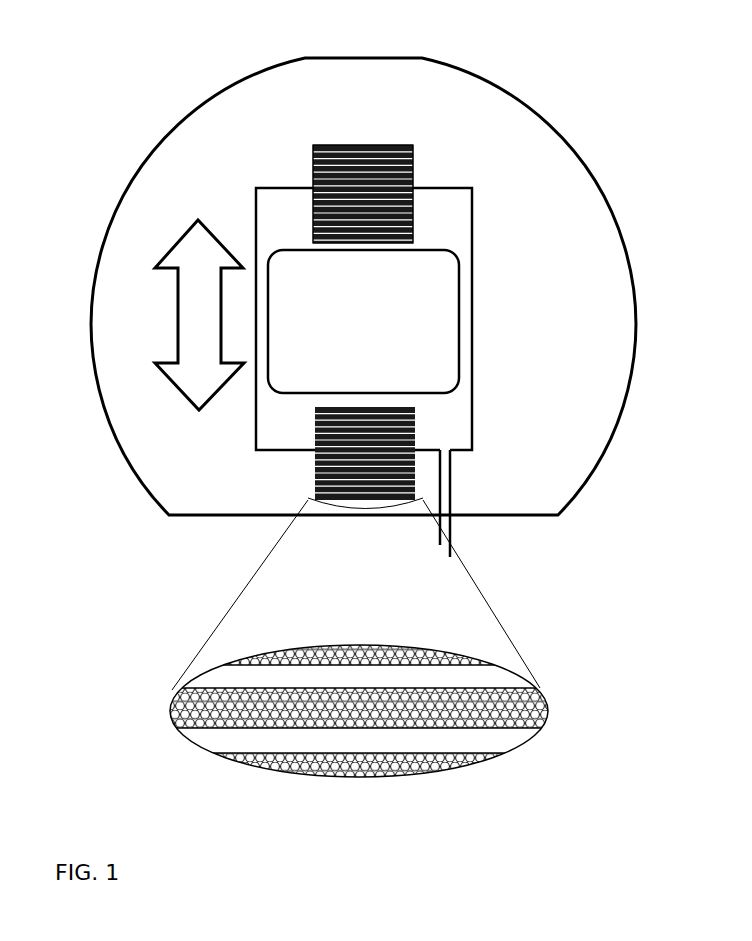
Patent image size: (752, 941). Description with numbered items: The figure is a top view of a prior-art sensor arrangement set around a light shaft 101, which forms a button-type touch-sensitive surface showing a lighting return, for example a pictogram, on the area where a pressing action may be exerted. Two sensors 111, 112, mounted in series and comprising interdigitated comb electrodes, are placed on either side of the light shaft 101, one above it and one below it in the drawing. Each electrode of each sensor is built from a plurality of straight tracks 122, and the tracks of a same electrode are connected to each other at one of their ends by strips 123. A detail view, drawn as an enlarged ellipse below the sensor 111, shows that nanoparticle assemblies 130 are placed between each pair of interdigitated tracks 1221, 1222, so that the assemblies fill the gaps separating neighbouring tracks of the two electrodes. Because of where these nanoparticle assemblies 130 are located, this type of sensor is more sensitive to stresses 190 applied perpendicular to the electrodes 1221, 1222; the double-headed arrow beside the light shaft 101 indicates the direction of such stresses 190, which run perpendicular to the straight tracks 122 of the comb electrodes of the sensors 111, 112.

The light shaft 101 is at (459, 323).
The sensor 111 is at (315, 468).
The sensor 112 is at (313, 166).
The straight tracks 122 is at (330, 144).
The strips 123 is at (413, 167).
The nanoparticle assemblies 130 is at (377, 716).
The interdigitated track 1221 is at (354, 675).
The interdigitated track 1222 is at (360, 788).
The stresses 190 is at (177, 320).